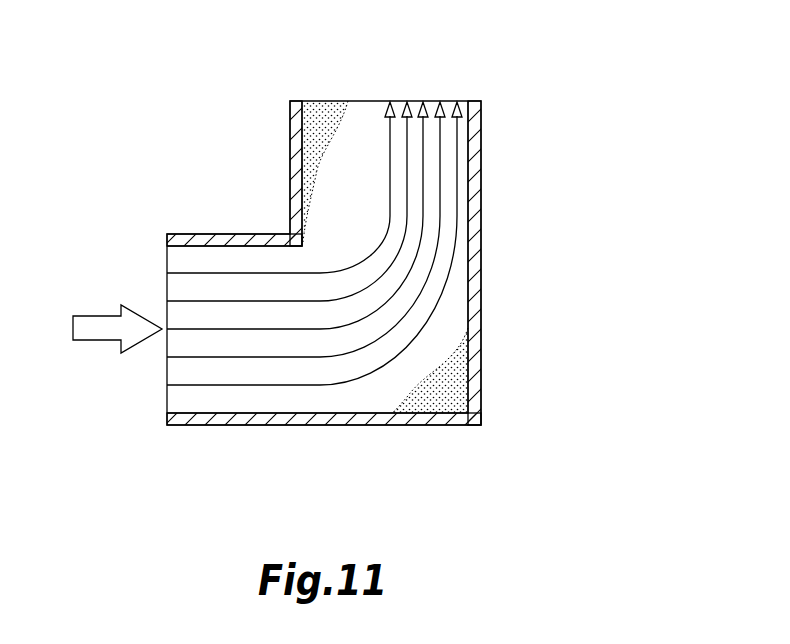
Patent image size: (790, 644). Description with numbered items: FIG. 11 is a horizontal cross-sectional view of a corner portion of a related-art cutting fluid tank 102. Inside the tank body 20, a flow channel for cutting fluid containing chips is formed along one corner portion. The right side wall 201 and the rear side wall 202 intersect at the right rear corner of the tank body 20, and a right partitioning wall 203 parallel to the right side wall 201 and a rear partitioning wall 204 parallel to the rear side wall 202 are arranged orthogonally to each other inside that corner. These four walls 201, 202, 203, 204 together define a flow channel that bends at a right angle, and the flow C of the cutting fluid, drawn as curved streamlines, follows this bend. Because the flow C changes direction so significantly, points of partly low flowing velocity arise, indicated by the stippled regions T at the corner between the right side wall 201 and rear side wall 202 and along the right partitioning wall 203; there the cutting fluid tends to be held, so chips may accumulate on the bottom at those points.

The cutting fluid tank 102 is at (520, 258).
The tank body 20 is at (217, 425).
The right side wall 201 is at (481, 167).
The rear side wall 202 is at (415, 426).
The right partitioning wall 203 is at (290, 130).
The rear partitioning wall 204 is at (192, 234).
The flow of the cutting fluid C is at (389, 136).
The turbulence region T is at (316, 111).